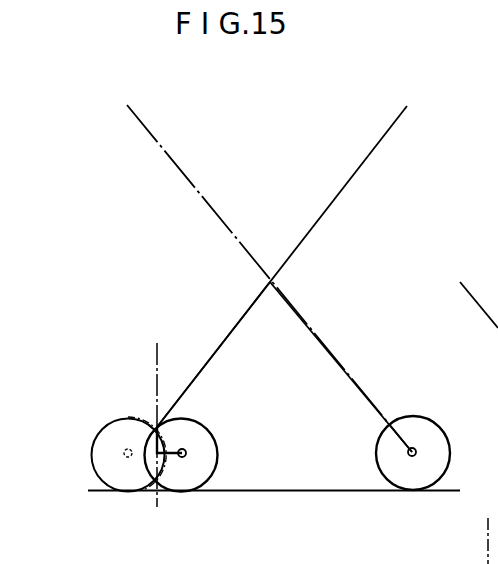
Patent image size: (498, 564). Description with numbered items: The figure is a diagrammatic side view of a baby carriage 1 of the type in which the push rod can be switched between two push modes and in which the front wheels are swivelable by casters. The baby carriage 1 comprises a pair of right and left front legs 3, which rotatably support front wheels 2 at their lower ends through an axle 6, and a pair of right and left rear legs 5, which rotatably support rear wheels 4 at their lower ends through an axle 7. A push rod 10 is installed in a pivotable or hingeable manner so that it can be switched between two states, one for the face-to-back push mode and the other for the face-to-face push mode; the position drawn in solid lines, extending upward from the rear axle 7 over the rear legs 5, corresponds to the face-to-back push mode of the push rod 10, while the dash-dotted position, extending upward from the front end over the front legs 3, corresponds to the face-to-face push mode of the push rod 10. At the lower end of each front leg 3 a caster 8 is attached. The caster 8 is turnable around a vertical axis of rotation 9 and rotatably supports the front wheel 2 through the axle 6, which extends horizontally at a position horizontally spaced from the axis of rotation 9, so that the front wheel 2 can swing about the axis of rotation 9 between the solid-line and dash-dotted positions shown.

The baby carriage 1 is at (267, 203).
The front wheel 2 is at (100, 431).
The front leg 3 is at (216, 349).
The rear wheel 4 is at (433, 417).
The rear leg 5 is at (328, 348).
The axle 6 is at (123, 453).
The axle 7 is at (407, 453).
The caster 8 is at (149, 430).
The axis of rotation 9 is at (155, 378).
The push rod 10 is at (178, 173).